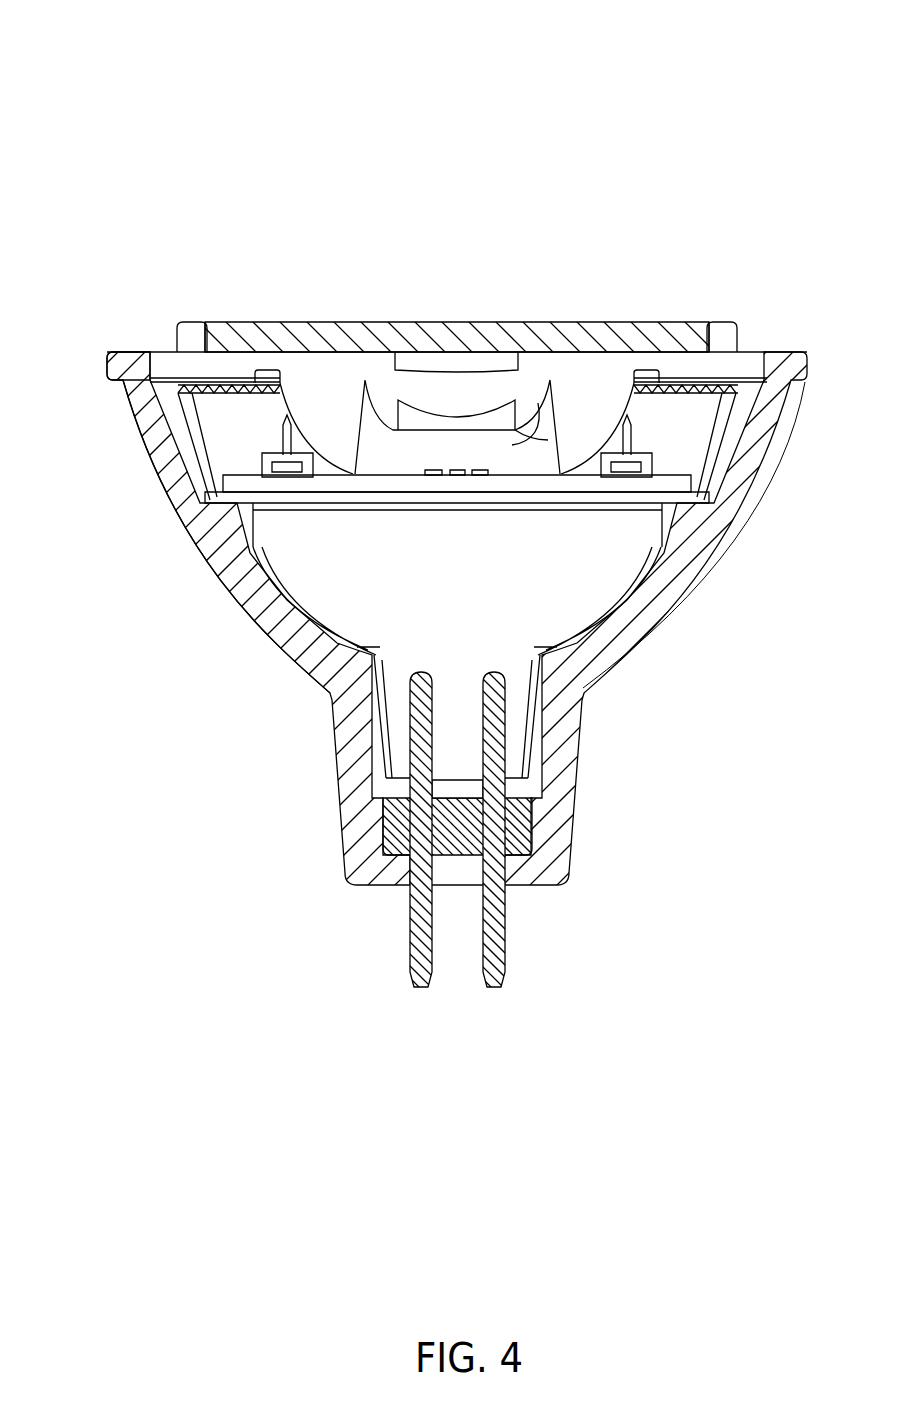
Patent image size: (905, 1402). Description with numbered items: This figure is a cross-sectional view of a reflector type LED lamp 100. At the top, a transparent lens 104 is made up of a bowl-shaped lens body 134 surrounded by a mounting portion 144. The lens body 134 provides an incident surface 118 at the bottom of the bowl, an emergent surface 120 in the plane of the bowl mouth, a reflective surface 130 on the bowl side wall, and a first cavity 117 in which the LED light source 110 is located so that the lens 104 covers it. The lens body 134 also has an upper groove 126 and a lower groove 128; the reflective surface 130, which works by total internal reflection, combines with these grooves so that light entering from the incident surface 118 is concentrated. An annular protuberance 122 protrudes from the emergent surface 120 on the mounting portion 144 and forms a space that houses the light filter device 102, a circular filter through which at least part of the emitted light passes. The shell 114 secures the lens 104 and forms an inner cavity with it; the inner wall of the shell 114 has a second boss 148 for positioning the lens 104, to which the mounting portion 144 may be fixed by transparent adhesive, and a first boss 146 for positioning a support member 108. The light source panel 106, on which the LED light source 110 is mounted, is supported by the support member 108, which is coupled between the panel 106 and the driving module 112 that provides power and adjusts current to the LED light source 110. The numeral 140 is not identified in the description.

The LED lamp 100 is at (680, 82).
The light filter device 102 is at (235, 345).
The lens 104 is at (287, 365).
The light source panel 106 is at (680, 470).
The support member 108 is at (192, 425).
The LED light source 110 is at (480, 478).
The driving module 112 is at (418, 598).
The shell 114 is at (695, 640).
The first cavity 117 is at (374, 470).
The incident surface 118 is at (560, 463).
The emergent surface 120 is at (397, 340).
The annular protuberance 122 is at (722, 325).
The upper groove 126 is at (498, 352).
The lower groove 128 is at (412, 418).
The reflective surface 130 is at (613, 418).
The lens body 134 is at (347, 388).
The electrical pins 140 is at (507, 960).
The mounting portion 144 is at (185, 370).
The first boss 146 is at (232, 512).
The second boss 148 is at (165, 447).